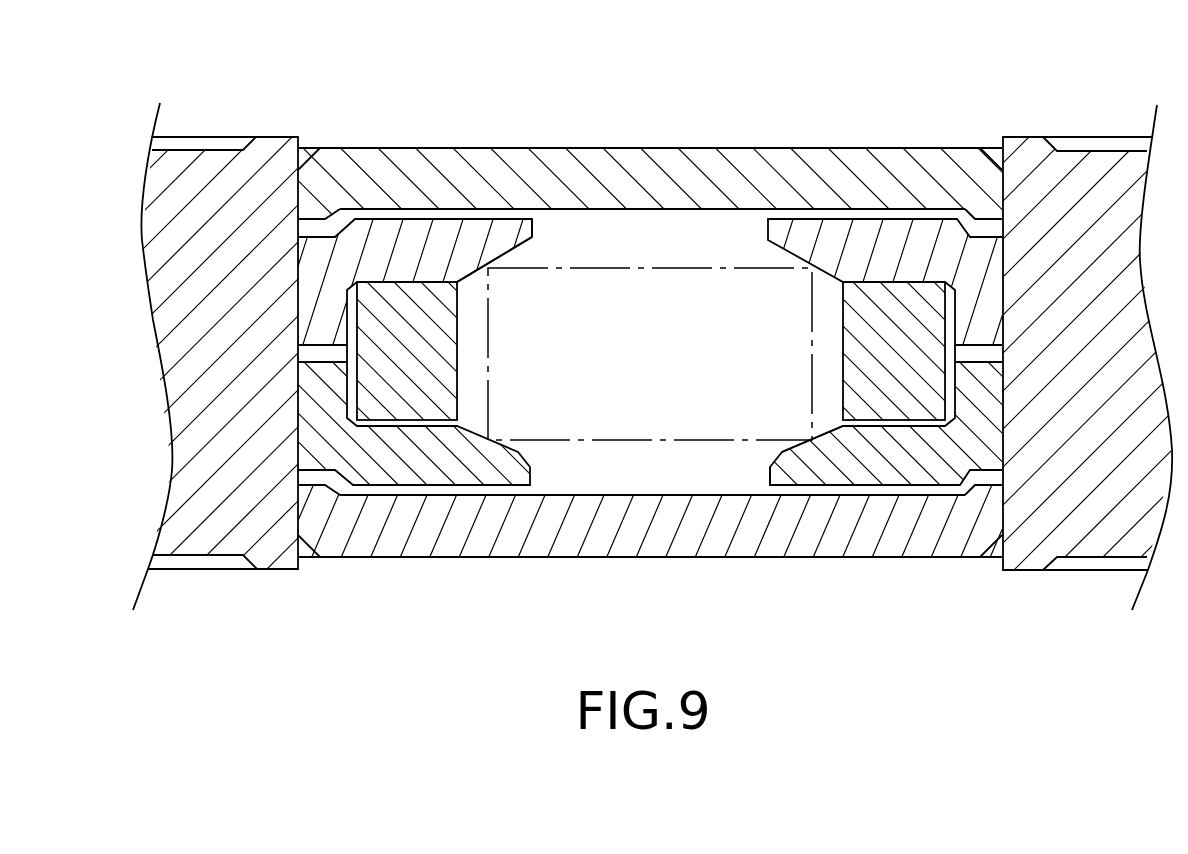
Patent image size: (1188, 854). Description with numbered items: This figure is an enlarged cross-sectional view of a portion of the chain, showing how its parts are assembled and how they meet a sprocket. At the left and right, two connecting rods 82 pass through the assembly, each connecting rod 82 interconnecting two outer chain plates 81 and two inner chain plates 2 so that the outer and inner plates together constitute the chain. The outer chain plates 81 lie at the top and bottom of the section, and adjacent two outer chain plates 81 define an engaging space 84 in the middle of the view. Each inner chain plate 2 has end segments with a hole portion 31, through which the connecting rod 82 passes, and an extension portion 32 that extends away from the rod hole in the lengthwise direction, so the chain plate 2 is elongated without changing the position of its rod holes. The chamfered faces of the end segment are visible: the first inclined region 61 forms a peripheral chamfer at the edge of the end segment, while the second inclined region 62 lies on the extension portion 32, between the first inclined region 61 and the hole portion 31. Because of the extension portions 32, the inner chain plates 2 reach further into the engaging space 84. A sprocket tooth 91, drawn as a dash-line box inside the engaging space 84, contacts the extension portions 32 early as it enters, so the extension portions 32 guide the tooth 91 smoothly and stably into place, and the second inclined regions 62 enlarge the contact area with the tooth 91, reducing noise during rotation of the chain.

The chain plate 2 is at (354, 212).
The hole portion 31 is at (402, 273).
The extension portion 32 is at (468, 262).
The first inclined region 61 is at (525, 248).
The second inclined region 62 is at (490, 270).
The outer chain plate 81 is at (932, 192).
The connecting rod 82 is at (202, 190).
The engaging space 84 is at (620, 242).
The tooth 91 is at (635, 440).